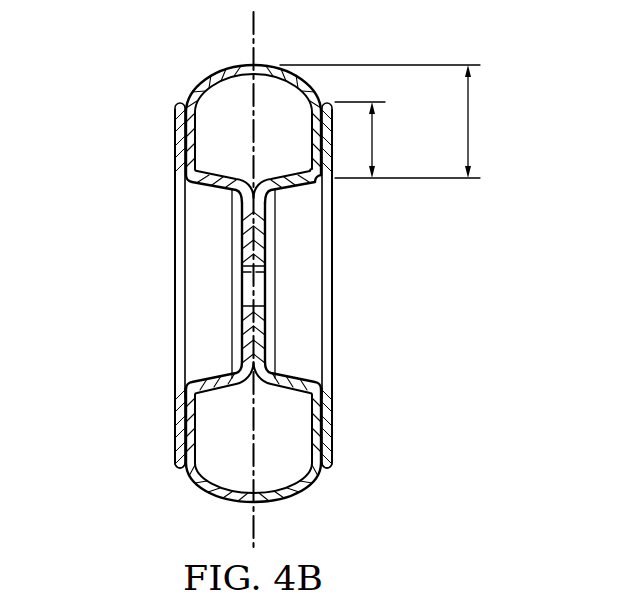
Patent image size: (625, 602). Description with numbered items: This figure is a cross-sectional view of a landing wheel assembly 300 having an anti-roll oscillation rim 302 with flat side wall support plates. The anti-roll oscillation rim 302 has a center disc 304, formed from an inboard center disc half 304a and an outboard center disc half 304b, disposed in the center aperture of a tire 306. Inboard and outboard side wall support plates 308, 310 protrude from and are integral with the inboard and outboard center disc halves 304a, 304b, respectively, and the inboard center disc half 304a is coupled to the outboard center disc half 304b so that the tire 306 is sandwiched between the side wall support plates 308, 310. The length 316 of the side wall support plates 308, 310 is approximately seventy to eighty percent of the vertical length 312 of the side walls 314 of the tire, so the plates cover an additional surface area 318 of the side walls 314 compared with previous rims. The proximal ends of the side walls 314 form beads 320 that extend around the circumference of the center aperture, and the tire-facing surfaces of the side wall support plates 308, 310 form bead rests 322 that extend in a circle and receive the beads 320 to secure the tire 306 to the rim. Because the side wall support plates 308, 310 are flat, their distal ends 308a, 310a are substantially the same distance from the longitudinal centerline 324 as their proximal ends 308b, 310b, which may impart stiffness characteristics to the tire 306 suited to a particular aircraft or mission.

The landing wheel assembly 300 is at (166, 66).
The anti-roll oscillation rim 302 is at (166, 302).
The center disc 304 is at (283, 283).
The inboard center disc half 304a is at (240, 237).
The outboard center disc half 304b is at (264, 220).
The tire 306 is at (205, 487).
The inboard side wall support plate 308 is at (176, 128).
The distal end of inboard side wall support plate 308a is at (180, 467).
The proximal end of inboard side wall support plate 308b is at (181, 393).
The outboard side wall support plate 310 is at (334, 428).
The distal end of outboard side wall support plate 310a is at (333, 463).
The proximal end of outboard side wall support plate 310b is at (335, 393).
The vertical length of side walls 312 is at (470, 122).
The side walls 314 is at (181, 457).
The length of side wall support plates 316 is at (373, 139).
The surface area of side walls 318 is at (184, 422).
The beads 320 is at (196, 173).
The bead rests 322 is at (185, 171).
The longitudinal centerline 324 is at (255, 528).